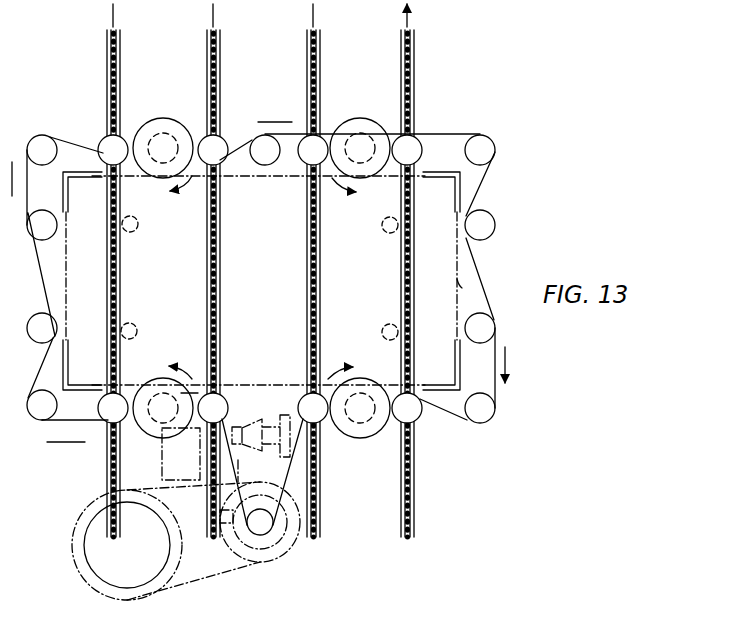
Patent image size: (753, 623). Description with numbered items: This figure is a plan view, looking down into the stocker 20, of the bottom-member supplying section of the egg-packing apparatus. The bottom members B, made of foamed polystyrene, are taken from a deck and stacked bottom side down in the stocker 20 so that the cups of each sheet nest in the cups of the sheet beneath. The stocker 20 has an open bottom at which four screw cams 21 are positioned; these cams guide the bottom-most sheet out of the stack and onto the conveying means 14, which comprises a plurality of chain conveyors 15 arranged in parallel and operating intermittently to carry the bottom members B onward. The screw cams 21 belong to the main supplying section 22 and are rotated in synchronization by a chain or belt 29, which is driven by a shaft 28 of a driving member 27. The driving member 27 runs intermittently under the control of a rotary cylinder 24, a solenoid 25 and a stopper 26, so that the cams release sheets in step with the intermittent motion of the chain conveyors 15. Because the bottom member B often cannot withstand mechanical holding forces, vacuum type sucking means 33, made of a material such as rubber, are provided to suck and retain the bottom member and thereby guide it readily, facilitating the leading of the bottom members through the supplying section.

The conveying means 14 is at (227, 270).
The chain conveyor 15 is at (207, 58).
The stocker 20 is at (443, 203).
The screw cam 21 is at (175, 96).
The main supplying section 22 is at (503, 149).
The rotary cylinder 24 is at (100, 588).
The solenoid 25 is at (250, 413).
The stopper 26 is at (223, 551).
The driving member 27 is at (272, 558).
The shaft 28 is at (266, 530).
The chain or belt 29 is at (292, 474).
The vacuum type sucking means 33 is at (138, 222).
The bottom member B is at (462, 288).